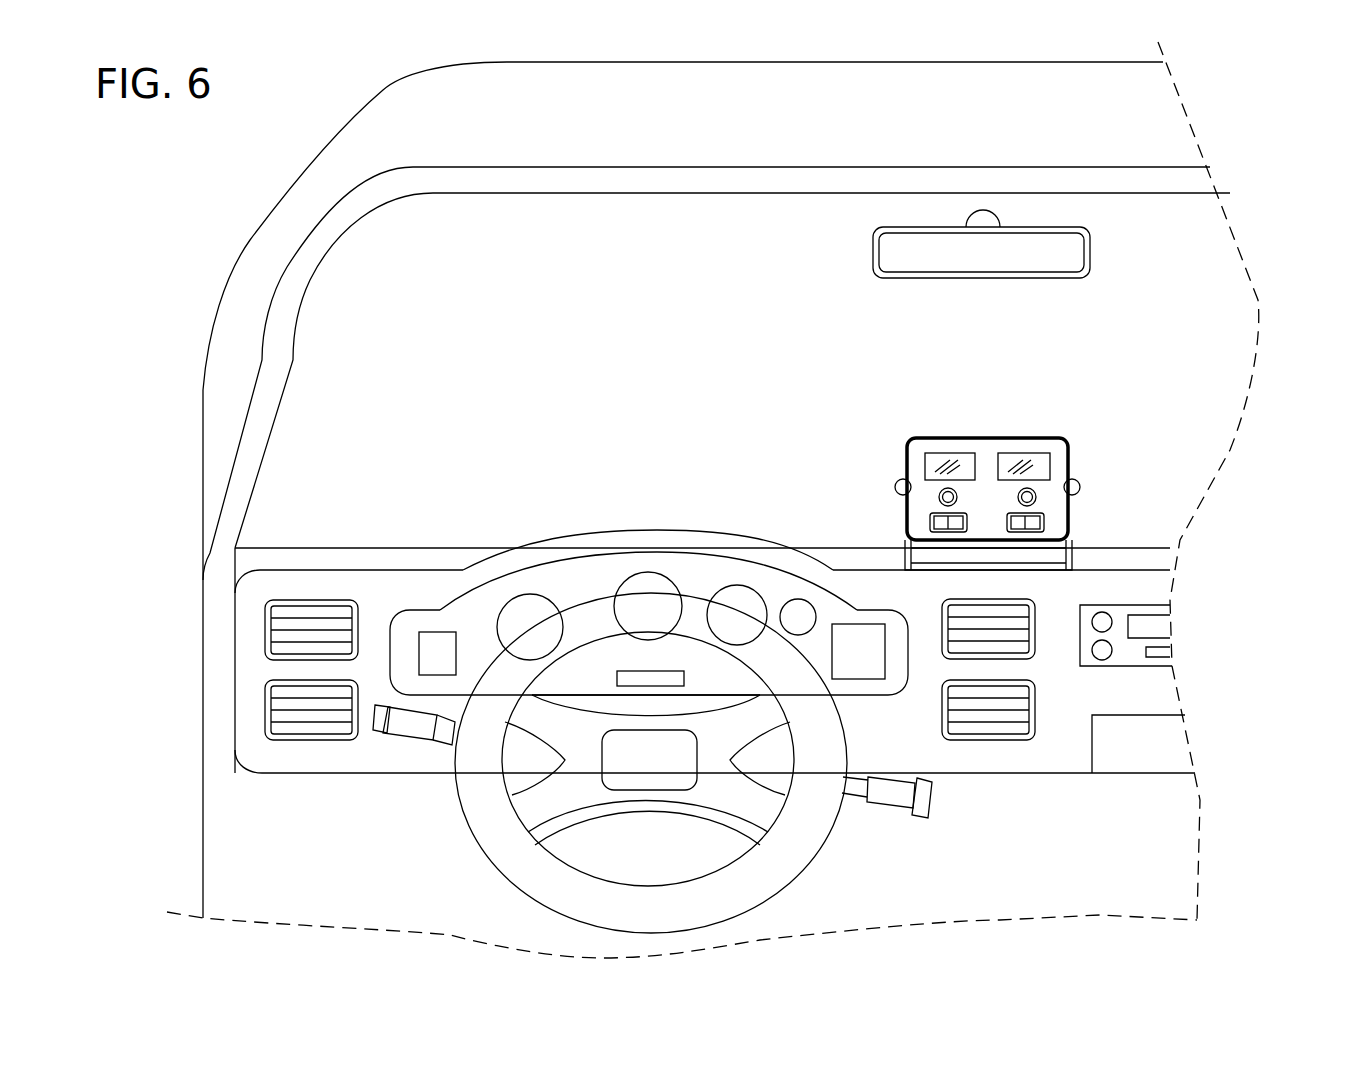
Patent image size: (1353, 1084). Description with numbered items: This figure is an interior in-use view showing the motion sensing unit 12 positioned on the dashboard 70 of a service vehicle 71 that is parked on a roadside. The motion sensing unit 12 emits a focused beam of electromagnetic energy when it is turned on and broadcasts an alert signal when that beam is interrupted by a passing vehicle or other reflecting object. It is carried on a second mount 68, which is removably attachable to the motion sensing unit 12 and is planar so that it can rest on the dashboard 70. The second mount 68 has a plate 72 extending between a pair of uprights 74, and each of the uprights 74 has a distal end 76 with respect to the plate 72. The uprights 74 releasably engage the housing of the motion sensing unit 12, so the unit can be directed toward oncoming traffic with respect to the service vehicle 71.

The motion sensing unit 12 is at (1068, 327).
The second mount 68 is at (1080, 521).
The dashboard 70 is at (817, 548).
The service vehicle 71 is at (208, 333).
The plate 72 is at (1040, 571).
The uprights 74 is at (905, 517).
The distal end 76 is at (901, 484).